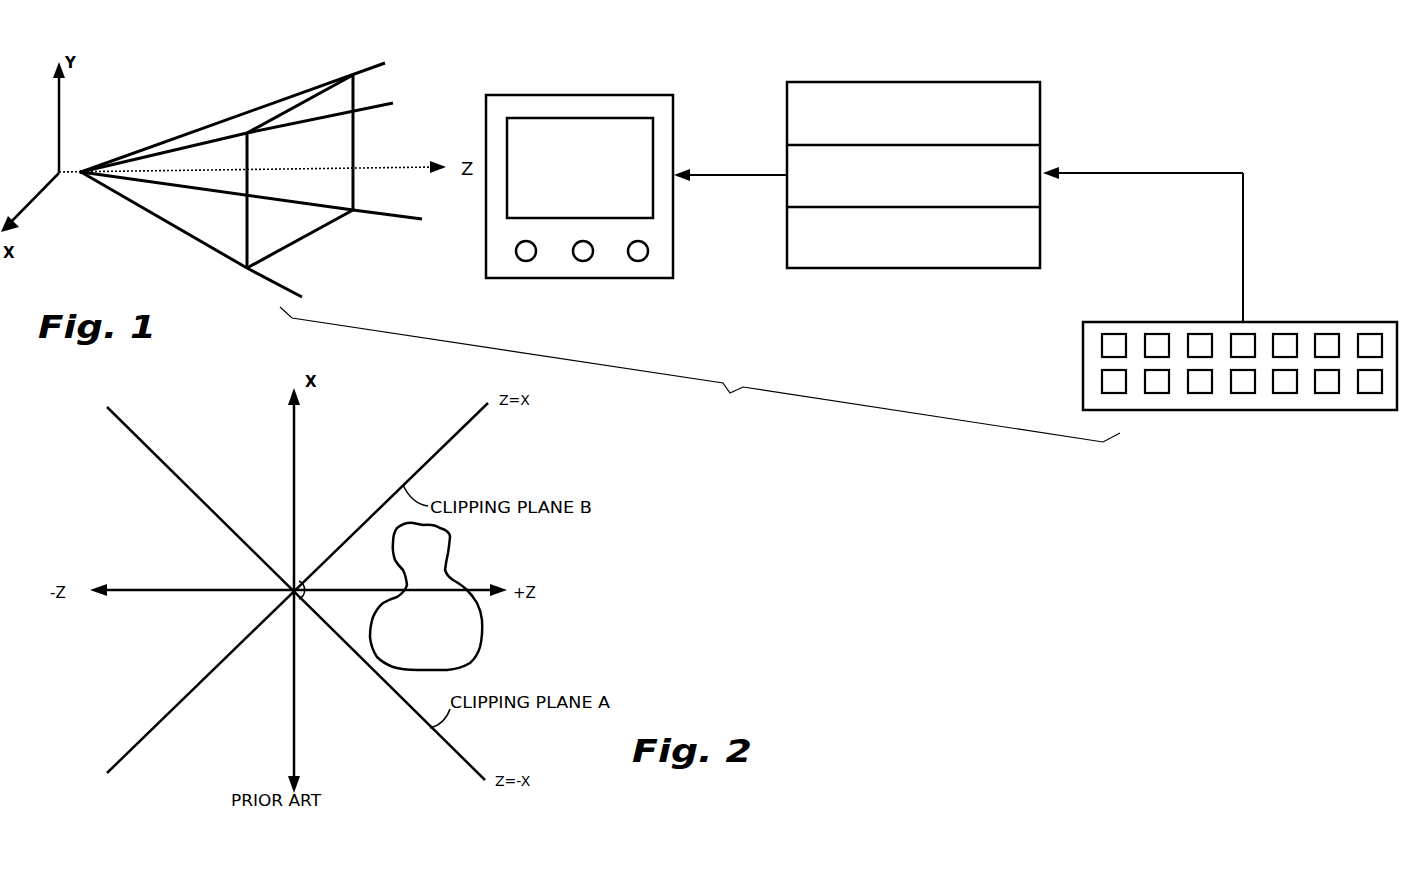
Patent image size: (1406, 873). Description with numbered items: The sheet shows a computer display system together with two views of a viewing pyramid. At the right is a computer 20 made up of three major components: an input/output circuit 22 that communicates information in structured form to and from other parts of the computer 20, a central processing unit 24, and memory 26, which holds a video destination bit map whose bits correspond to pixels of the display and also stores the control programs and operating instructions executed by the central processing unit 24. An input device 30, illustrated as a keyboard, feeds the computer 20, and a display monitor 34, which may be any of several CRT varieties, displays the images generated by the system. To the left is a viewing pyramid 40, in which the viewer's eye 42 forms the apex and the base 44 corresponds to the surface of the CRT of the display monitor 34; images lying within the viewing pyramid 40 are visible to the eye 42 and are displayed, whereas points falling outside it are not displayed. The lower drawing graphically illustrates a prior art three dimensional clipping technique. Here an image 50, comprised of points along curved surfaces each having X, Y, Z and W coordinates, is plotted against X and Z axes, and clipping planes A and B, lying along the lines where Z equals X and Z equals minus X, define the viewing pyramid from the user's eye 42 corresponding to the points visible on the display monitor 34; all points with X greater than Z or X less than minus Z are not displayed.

In FIG. 1, the computer 20 is at (941, 78).
In FIG. 1, the input/output (I/O) circuit 22 is at (918, 173).
In FIG. 1, the central processing unit (CPU) 24 is at (909, 112).
In FIG. 1, the memory 26 is at (904, 233).
In FIG. 1, the input device 30 is at (1270, 411).
In FIG. 1, the display monitor 34 is at (570, 112).
In FIG. 1, the viewing pyramid 40 is at (218, 118).
In FIG. 1, the viewer's eye 42 is at (88, 182).
In FIG. 2, the viewer's eye 42 is at (298, 594).
In FIG. 1, the base of the viewing pyramid 44 is at (293, 149).
In FIG. 2, the image 50 is at (426, 596).